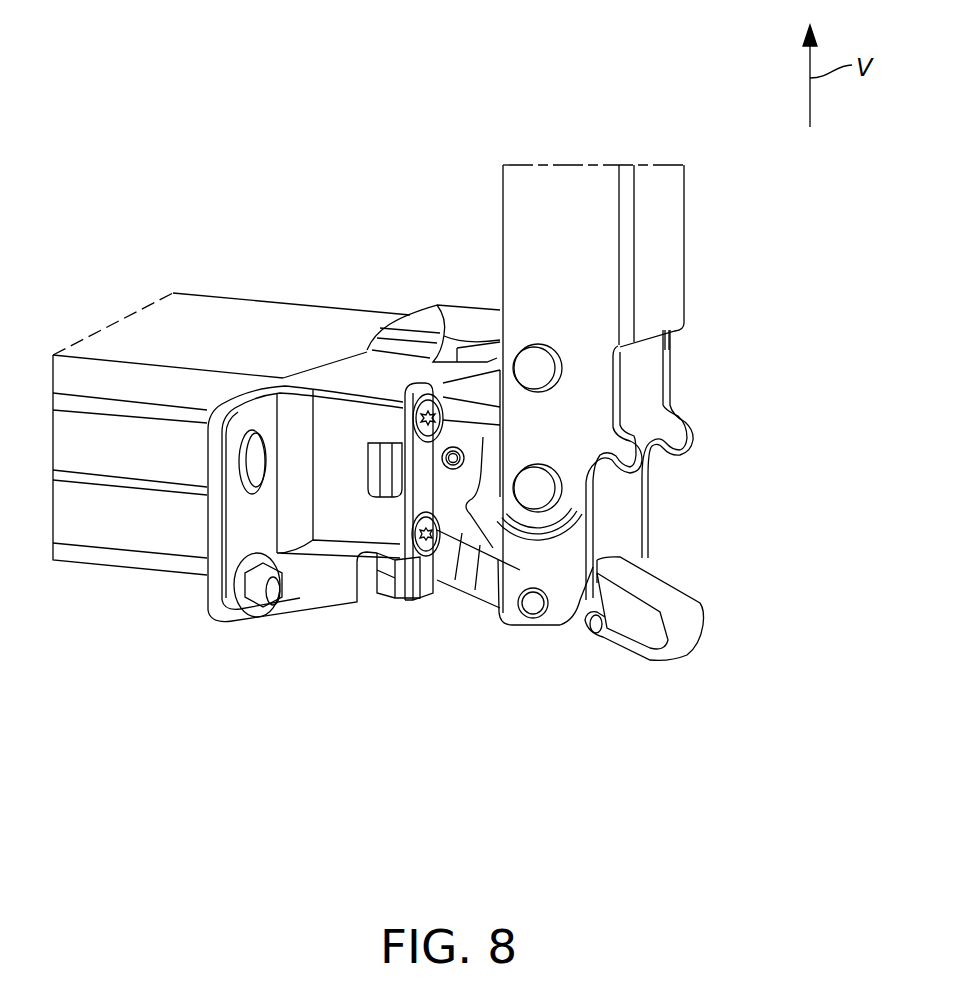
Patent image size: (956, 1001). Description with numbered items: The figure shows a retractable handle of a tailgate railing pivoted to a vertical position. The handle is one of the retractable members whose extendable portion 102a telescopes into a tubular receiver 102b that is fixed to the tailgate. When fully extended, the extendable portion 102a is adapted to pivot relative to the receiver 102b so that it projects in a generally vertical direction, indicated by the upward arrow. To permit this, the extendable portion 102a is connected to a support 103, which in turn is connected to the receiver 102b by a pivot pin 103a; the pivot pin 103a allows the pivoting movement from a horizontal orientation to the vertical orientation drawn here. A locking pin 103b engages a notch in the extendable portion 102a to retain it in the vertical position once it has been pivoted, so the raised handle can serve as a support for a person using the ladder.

The extendable portion 102a is at (665, 202).
The tubular receiver 102b is at (267, 318).
The support 103 is at (667, 668).
The pivot pin 103a is at (535, 482).
The locking pin 103b is at (535, 607).